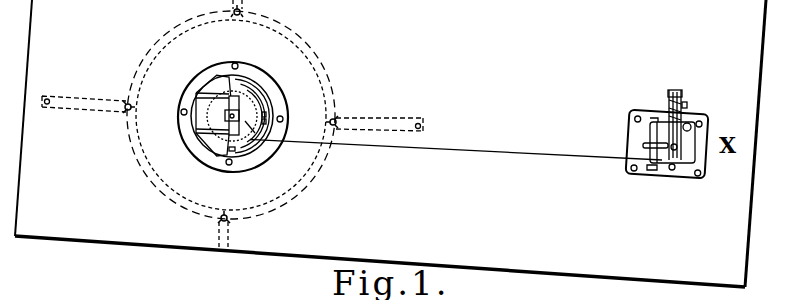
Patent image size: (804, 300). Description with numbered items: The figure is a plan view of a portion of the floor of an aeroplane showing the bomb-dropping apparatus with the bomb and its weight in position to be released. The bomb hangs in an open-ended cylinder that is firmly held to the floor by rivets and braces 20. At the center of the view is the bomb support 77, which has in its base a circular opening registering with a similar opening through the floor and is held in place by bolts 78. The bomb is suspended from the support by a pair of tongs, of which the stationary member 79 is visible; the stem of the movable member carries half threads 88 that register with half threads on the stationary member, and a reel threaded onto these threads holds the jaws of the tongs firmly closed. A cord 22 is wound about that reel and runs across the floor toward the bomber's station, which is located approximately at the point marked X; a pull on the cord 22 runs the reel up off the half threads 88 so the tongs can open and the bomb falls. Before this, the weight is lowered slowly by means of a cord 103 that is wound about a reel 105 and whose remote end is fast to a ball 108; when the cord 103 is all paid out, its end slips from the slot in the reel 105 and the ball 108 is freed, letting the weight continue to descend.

The braces 20 is at (83, 102).
The cord 22 is at (482, 152).
The bomb support 77 is at (205, 140).
The bolts 78 is at (283, 117).
The stationary member of the tongs 79 is at (240, 261).
The half threads 88 is at (256, 143).
The cord 103 is at (671, 90).
The reel 105 is at (679, 90).
The ball 108 is at (687, 97).